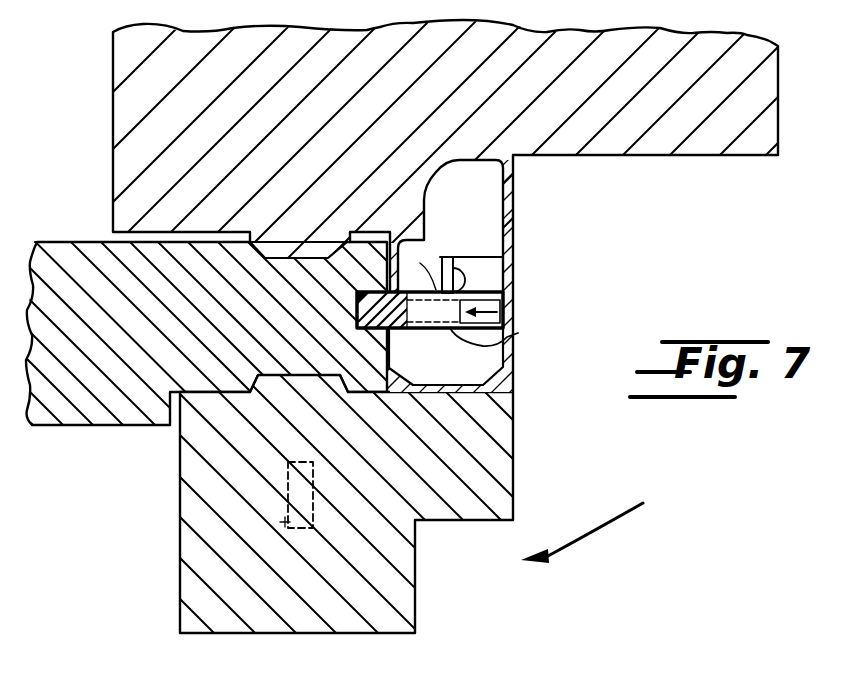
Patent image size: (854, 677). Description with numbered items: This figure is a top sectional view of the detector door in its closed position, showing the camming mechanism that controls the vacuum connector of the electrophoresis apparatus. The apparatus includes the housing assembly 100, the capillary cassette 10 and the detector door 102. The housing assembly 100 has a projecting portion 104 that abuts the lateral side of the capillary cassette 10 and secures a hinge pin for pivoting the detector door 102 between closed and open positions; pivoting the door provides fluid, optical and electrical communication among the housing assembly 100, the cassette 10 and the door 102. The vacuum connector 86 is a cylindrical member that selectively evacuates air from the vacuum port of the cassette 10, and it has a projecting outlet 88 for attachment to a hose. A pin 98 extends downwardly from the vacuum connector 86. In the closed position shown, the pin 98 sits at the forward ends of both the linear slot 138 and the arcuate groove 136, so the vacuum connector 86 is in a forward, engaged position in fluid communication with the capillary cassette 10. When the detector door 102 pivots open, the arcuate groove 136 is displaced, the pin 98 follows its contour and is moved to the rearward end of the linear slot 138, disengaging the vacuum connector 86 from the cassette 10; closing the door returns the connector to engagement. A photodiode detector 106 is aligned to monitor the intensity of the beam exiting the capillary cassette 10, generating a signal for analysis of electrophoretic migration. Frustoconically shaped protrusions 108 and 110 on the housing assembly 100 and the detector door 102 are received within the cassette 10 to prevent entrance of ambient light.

The capillary cassette 10 is at (75, 420).
The vacuum connector 86 is at (510, 303).
The projecting outlet 88 is at (468, 276).
The pin 98 is at (400, 328).
The housing assembly 100 is at (648, 147).
The detector door 102 is at (502, 479).
The projecting portion 104 is at (514, 204).
The photodiode detector 106 is at (290, 521).
The frustoconically shaped protrusion 108 is at (305, 241).
The frustoconically shaped protrusion 110 is at (283, 392).
The arcuate groove 136 is at (434, 292).
The linear slot 138 is at (528, 337).